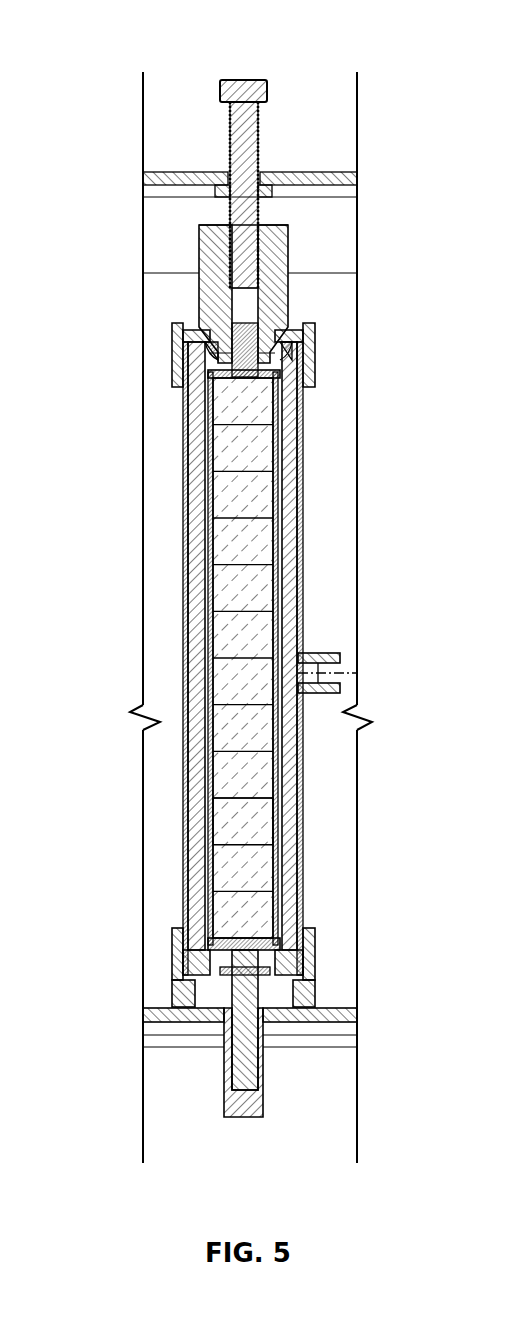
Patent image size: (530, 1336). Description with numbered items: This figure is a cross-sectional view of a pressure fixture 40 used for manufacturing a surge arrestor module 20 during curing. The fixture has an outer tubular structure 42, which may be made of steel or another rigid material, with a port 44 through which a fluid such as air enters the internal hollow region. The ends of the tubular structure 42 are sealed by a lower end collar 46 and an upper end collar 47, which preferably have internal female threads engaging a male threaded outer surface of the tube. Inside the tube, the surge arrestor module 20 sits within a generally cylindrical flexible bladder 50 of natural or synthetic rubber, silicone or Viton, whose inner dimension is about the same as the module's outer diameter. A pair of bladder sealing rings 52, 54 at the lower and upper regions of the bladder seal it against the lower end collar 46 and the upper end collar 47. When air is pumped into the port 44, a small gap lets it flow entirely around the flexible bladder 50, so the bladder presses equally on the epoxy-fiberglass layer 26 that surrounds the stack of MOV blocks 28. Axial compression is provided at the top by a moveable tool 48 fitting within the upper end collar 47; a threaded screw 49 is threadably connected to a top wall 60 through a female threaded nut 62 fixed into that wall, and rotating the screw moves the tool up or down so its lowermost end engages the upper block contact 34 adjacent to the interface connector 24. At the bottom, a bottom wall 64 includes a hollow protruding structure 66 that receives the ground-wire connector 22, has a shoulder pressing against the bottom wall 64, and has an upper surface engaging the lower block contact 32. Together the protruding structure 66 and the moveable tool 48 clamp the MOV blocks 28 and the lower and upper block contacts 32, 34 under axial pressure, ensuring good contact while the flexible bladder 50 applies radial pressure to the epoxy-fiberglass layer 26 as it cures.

The surge arrestor module 20 is at (245, 654).
The ground-wire connector 22 is at (240, 936).
The interface connector 24 is at (245, 310).
The epoxy-fiberglass layer 26 is at (205, 490).
The MOV blocks 28 is at (225, 825).
The lower block contact 32 is at (263, 936).
The upper block contact 34 is at (265, 385).
The pressure fixture 40 is at (117, 634).
The outer tubular structure 42 is at (188, 868).
The port 44 is at (340, 661).
The lower end collar 46 is at (175, 965).
The upper end collar 47 is at (198, 347).
The moveable tool 48 is at (207, 251).
The threaded screw 49 is at (238, 80).
The flexible bladder 50 is at (197, 758).
The bladder sealing ring 52 is at (300, 975).
The bladder sealing ring 54 is at (292, 342).
The top wall 60 is at (358, 176).
The female threaded nut 62 is at (250, 186).
The bottom wall 64 is at (355, 1012).
The protruding structure 66 is at (147, 1015).